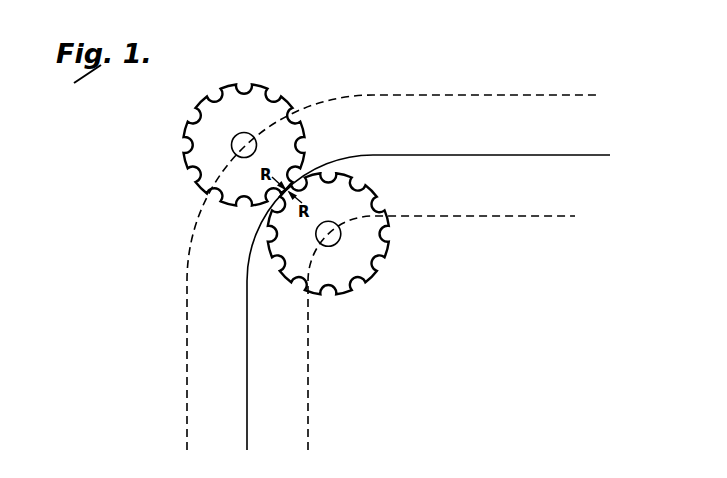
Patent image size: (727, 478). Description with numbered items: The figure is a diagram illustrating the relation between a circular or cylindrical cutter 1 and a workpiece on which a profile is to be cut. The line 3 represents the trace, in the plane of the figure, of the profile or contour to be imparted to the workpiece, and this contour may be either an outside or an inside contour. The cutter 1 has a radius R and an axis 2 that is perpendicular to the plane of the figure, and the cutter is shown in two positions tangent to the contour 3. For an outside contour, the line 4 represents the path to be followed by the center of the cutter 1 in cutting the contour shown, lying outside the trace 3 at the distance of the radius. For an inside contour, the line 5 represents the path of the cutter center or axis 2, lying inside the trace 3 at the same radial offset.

The circular or cylindrical cutter 1 is at (253, 88).
The axis 2 is at (244, 146).
The trace of the profile or contour 3 is at (248, 359).
The path of the cutter center for an outside contour 4 is at (188, 366).
The path of the cutter center for an inside contour 5 is at (309, 368).